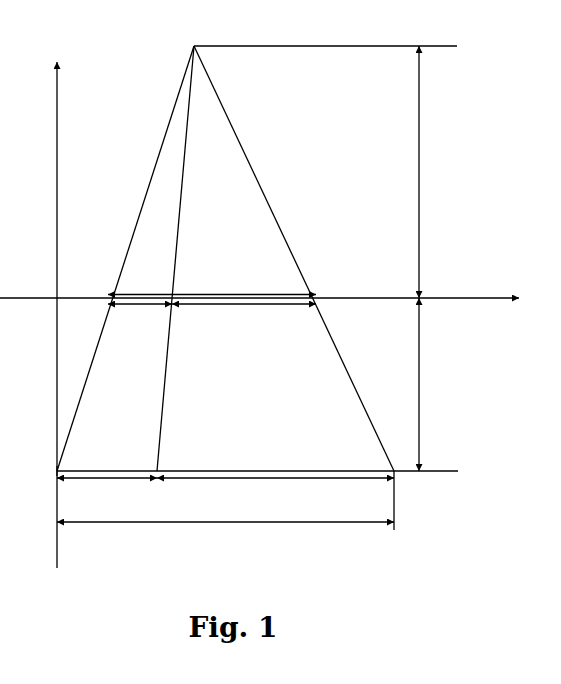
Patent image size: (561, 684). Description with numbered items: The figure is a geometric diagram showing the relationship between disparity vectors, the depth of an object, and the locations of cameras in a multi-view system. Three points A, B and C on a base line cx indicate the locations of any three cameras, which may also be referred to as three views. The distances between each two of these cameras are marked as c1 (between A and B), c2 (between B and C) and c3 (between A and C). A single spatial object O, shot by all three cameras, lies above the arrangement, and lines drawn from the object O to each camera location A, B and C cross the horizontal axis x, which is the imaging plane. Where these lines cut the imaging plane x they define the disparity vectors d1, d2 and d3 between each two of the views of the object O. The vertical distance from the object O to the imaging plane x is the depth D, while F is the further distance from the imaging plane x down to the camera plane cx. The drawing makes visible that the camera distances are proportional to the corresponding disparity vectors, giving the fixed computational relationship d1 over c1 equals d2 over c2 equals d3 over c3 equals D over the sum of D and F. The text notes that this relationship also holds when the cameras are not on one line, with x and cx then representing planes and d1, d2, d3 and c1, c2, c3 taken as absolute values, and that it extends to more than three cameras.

The spatial object O is at (225, 238).
The camera location A is at (41, 490).
The camera location B is at (170, 280).
The camera location C is at (406, 500).
The depth D is at (439, 172).
The distance from imaging plane to camera plane F is at (436, 384).
The X axis (imaging plane) x is at (259, 310).
The camera plane cx is at (286, 463).
The distance between cameras A and B c1 is at (107, 493).
The distance between cameras B and C c2 is at (275, 494).
The distance between cameras A and C c3 is at (225, 538).
The disparity vector between views A and B d1 is at (140, 320).
The disparity vector between views B and C d2 is at (244, 320).
The disparity vector between views A and C d3 is at (212, 284).